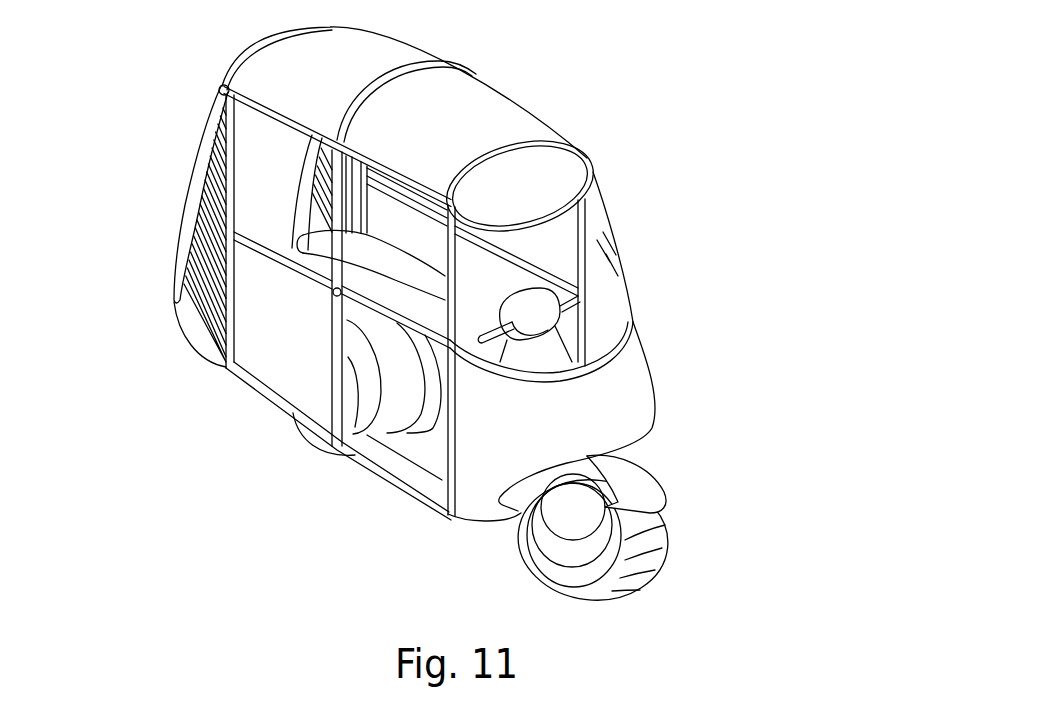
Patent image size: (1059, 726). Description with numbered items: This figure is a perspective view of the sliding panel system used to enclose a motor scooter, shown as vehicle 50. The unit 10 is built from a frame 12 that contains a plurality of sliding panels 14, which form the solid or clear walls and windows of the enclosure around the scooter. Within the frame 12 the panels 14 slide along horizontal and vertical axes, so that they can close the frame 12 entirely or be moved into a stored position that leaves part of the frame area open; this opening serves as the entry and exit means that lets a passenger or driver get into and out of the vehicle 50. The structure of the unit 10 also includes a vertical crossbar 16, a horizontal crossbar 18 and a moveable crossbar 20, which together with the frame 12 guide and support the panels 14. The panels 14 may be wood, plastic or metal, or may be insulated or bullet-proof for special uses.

The sliding panel system unit 10 is at (206, 268).
The frame 12 is at (253, 110).
The sliding panels 14 is at (285, 360).
The vertical crossbar 16 is at (335, 250).
The horizontal crossbar 18 is at (282, 262).
The moveable crossbar 20 is at (418, 332).
The vehicle 50 is at (583, 64).